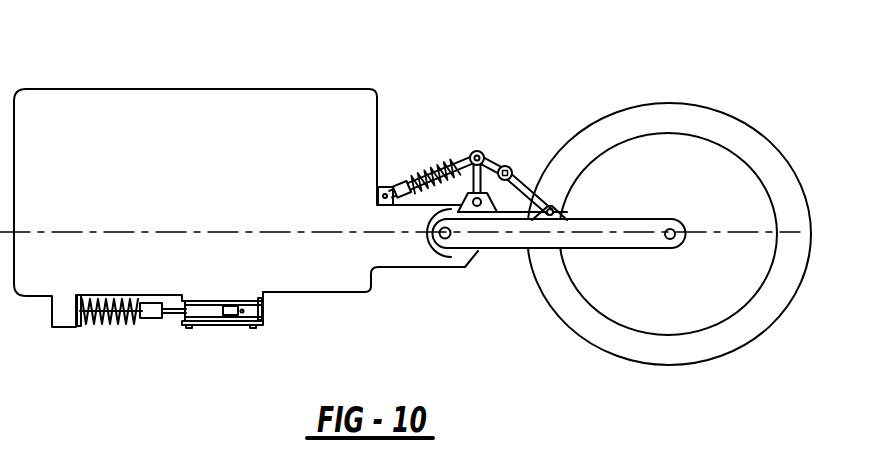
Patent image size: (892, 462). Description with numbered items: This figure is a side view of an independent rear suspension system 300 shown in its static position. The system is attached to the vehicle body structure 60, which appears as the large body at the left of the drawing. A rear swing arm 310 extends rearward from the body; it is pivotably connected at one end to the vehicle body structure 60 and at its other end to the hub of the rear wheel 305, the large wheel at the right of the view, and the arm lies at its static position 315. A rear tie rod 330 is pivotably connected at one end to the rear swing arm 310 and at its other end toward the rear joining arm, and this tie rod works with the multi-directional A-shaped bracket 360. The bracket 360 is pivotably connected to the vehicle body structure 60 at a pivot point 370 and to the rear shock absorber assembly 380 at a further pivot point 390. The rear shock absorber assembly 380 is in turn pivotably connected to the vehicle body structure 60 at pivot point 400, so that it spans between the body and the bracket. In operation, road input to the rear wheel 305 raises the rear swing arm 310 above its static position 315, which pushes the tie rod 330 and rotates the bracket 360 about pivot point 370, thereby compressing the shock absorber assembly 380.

The vehicle body structure 60 is at (94, 88).
The independent rear suspension system 300 is at (519, 166).
The rear wheel 305 is at (702, 117).
The rear swing arm 310 is at (634, 220).
The static position 315 is at (712, 233).
The rear tie rod 330 is at (515, 165).
The multi-directional A-shaped bracket 360 is at (488, 166).
The pivot point 370 is at (480, 206).
The rear shock absorber assembly 380 is at (469, 153).
The pivot point 390 is at (477, 152).
The pivot point 400 is at (406, 180).